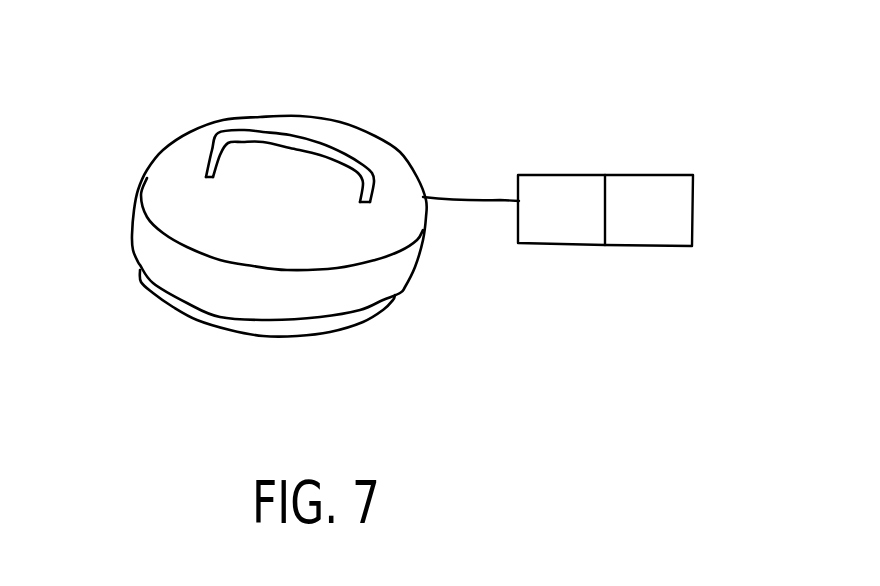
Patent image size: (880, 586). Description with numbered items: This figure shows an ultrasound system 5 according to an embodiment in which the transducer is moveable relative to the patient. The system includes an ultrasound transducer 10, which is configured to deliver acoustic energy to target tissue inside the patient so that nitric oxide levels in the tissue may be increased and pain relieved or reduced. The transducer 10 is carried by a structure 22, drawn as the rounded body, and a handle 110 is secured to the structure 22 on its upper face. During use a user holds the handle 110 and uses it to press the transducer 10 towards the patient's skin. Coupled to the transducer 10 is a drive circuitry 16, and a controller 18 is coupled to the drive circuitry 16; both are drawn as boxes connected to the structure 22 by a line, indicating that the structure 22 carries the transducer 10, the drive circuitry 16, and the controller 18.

The ultrasound system 5 is at (384, 211).
The ultrasound transducer 10 is at (312, 330).
The structure 22 is at (157, 158).
The handle 110 is at (280, 140).
The drive circuitry 16 is at (558, 178).
The controller 18 is at (658, 170).